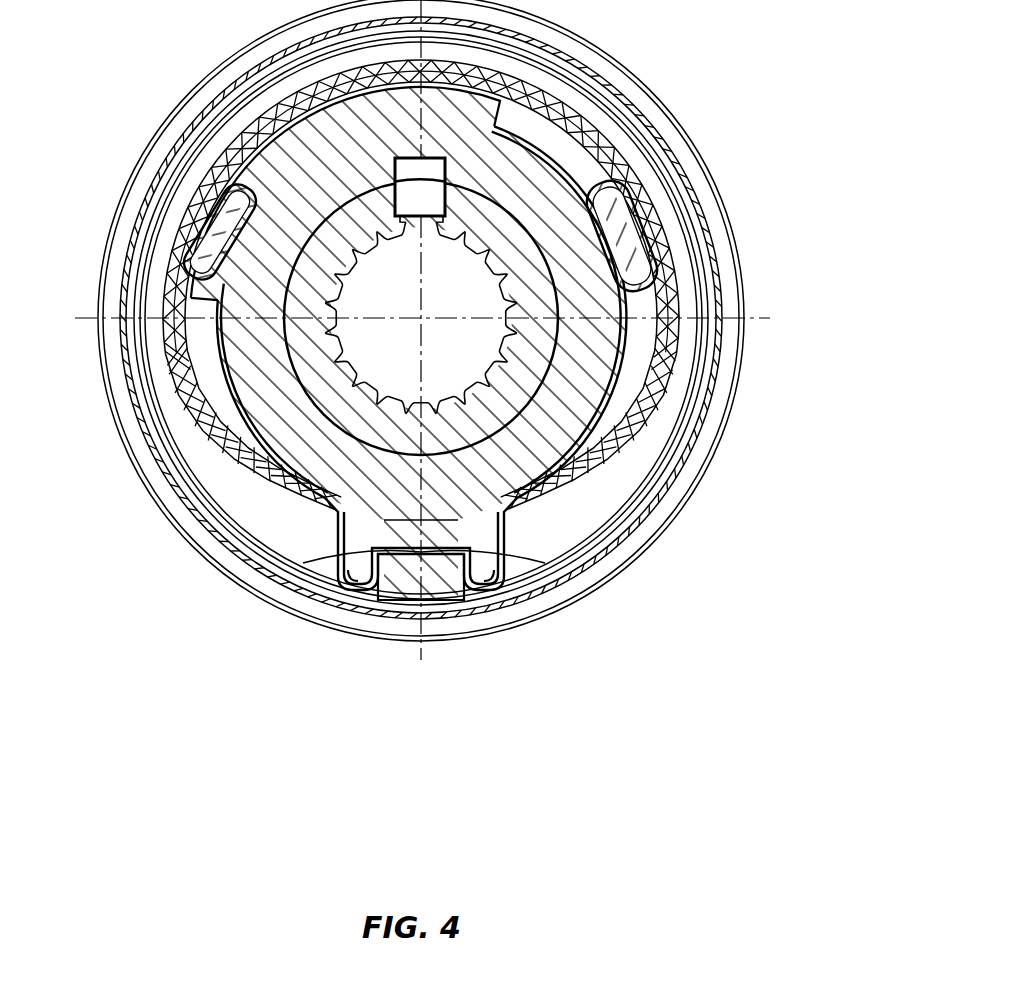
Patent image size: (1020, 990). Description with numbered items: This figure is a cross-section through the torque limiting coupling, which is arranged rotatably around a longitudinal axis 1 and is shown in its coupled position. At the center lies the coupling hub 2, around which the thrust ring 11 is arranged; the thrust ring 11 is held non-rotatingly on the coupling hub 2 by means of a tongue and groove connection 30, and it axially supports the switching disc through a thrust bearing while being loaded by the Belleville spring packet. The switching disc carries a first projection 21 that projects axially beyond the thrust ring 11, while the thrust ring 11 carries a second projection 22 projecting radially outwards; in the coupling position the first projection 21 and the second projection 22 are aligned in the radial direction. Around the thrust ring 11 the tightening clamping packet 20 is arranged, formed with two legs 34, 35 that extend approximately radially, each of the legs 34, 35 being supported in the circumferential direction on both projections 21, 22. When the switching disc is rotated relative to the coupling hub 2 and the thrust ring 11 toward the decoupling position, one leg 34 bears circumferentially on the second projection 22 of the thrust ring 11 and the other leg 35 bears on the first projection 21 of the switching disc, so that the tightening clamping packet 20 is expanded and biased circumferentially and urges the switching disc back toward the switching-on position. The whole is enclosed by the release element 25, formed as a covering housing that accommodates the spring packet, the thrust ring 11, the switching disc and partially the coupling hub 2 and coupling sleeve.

The longitudinal axis 1 is at (423, 323).
The coupling hub 2 is at (488, 222).
The thrust ring 11 is at (600, 382).
The tightening clamping packet 20 is at (580, 120).
The first projection 21 is at (407, 582).
The second projection 22 is at (437, 592).
The release element 25 is at (653, 148).
The tongue and groove connection 30 is at (407, 190).
The leg 34 is at (303, 563).
The leg 35 is at (545, 563).